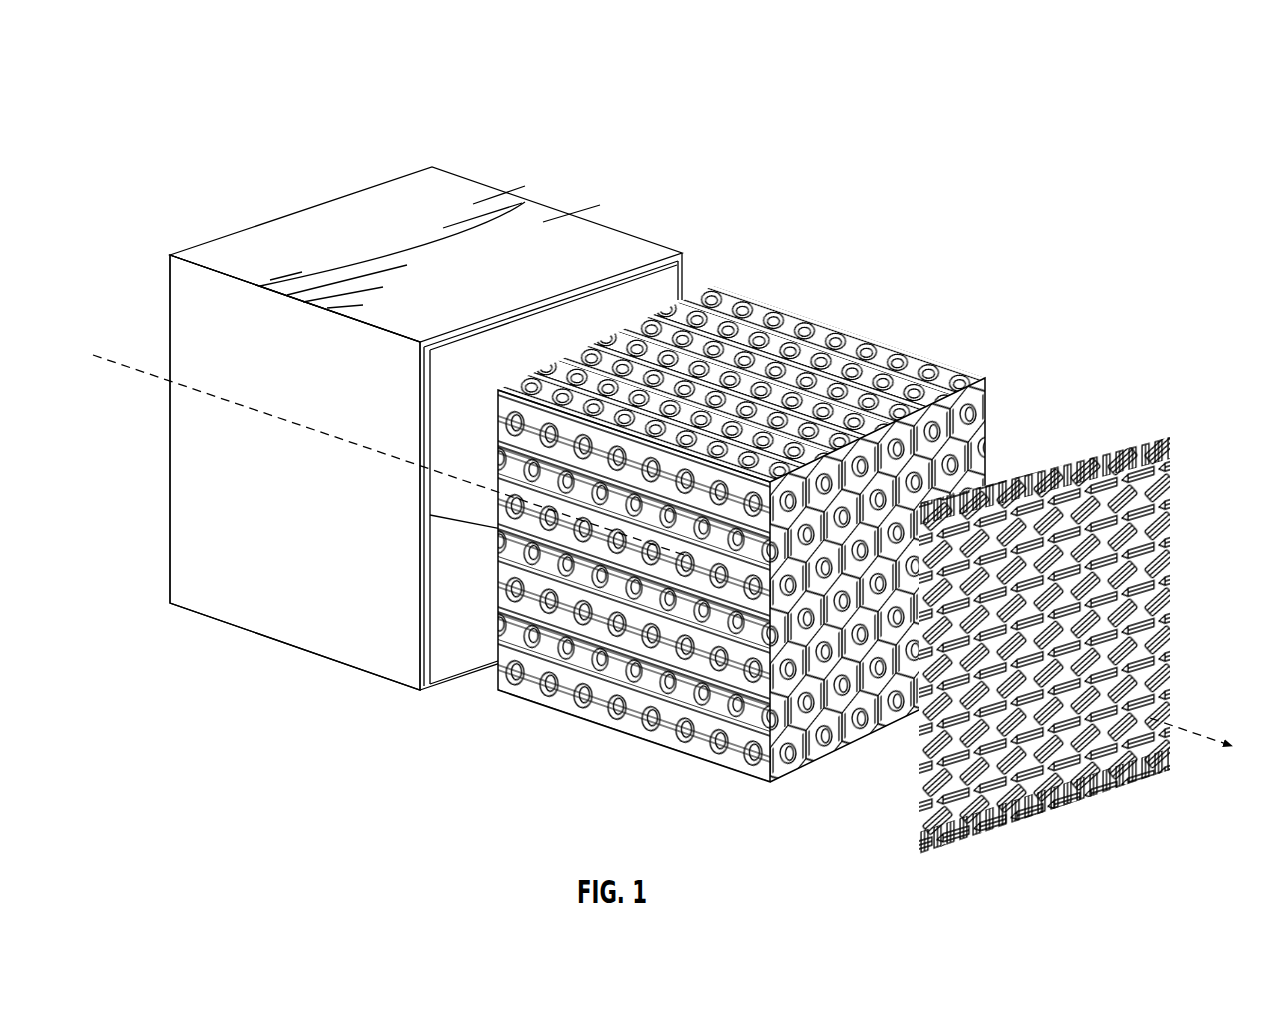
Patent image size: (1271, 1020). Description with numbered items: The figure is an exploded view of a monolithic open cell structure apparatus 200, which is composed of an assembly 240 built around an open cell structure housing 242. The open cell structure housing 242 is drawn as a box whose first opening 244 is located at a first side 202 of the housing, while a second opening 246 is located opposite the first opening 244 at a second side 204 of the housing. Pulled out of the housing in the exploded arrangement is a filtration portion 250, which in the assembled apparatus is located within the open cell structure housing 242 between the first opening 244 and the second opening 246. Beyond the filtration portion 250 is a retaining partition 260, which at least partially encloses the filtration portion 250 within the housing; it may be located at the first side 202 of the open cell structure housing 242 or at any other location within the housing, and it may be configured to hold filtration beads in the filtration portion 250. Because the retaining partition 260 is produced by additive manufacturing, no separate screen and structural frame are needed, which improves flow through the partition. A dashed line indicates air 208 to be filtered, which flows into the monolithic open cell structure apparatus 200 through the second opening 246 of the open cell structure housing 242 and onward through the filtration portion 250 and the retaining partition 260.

The monolithic open cell structure apparatus 200 is at (200, 130).
The first side 202 is at (470, 645).
The second side 204 is at (153, 559).
The air 208 is at (133, 375).
The assembly 240 is at (842, 521).
The open cell structure housing 242 is at (415, 195).
The first opening 244 is at (650, 268).
The second opening 246 is at (148, 495).
The filtration portion 250 is at (817, 367).
The retaining partition 260 is at (1068, 455).